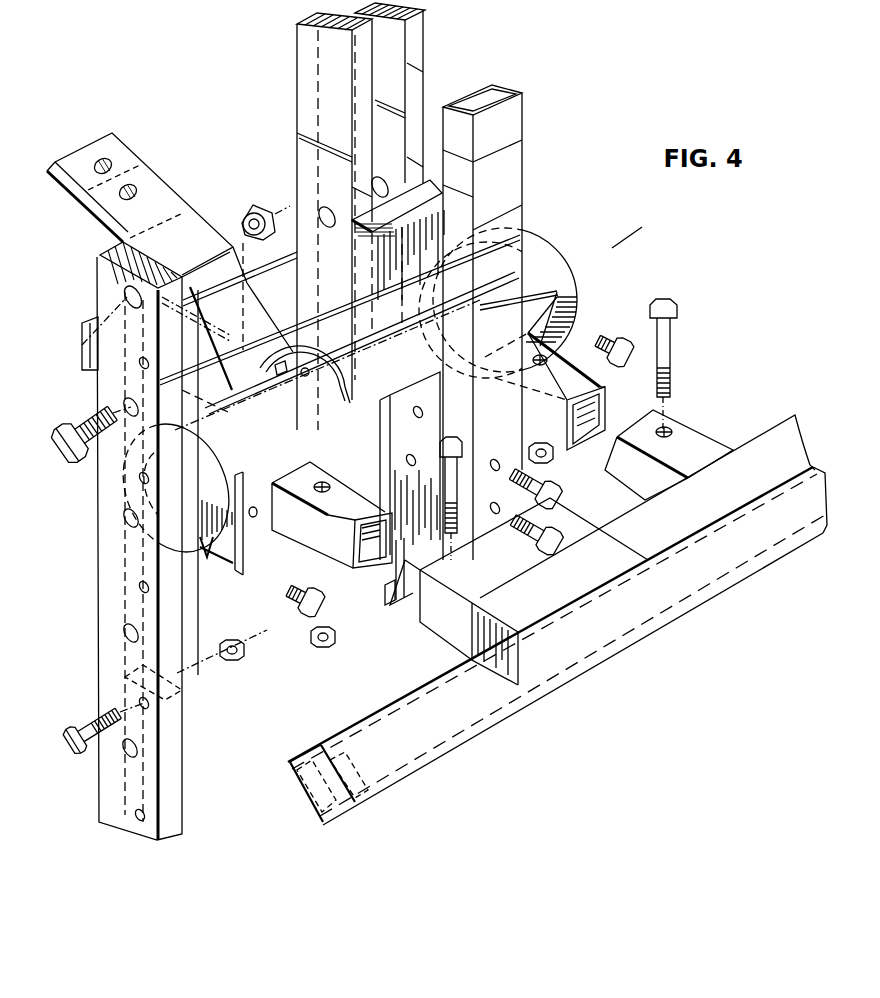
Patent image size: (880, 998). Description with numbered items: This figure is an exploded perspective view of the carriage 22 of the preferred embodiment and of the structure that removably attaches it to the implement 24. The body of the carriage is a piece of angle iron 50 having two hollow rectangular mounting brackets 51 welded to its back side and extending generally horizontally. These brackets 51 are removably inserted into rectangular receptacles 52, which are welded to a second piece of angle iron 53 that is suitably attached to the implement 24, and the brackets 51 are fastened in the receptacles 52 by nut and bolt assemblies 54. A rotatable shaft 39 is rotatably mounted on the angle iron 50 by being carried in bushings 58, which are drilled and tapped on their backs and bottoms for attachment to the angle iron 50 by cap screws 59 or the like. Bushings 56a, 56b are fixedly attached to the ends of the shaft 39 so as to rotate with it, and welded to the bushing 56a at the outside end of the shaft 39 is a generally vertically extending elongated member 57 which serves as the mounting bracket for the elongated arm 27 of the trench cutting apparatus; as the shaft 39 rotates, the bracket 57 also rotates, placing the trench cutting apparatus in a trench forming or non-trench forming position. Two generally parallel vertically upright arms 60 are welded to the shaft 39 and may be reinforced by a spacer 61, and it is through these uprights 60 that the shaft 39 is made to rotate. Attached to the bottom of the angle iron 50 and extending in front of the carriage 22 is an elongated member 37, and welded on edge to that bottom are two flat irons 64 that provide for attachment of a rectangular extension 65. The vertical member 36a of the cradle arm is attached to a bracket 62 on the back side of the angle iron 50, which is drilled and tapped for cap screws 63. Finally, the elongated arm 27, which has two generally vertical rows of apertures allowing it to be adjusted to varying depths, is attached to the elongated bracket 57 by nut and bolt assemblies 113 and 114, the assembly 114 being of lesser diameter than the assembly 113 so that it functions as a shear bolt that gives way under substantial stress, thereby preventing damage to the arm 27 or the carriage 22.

The carriage 22 is at (612, 248).
The implement 24 is at (672, 613).
The elongated arm 27 is at (110, 647).
The vertical member 36a is at (512, 135).
The elongated member 37 is at (153, 192).
The rotatable shaft 39 is at (288, 385).
The angle iron 50 is at (260, 560).
The hollow rectangular mounting brackets 51 is at (345, 555).
The rectangular receptacles 52 is at (432, 623).
The angle iron 53 is at (767, 447).
The nut and bolt assemblies 54 is at (667, 333).
The bushing 56a is at (213, 560).
The bushing 56b is at (567, 293).
The elongated member 57 is at (195, 690).
The bushings 58 is at (527, 285).
The cap screws 59 is at (620, 340).
The vertically upright arms 60 is at (300, 48).
The spacer 61 is at (357, 275).
The bracket 62 is at (373, 438).
The cap screws 63 is at (538, 540).
The flat irons 64 is at (393, 597).
The rectangular extension 65 is at (90, 327).
The nut and bolt assembly 113 is at (70, 464).
The nut and bolt assembly 114 is at (78, 752).